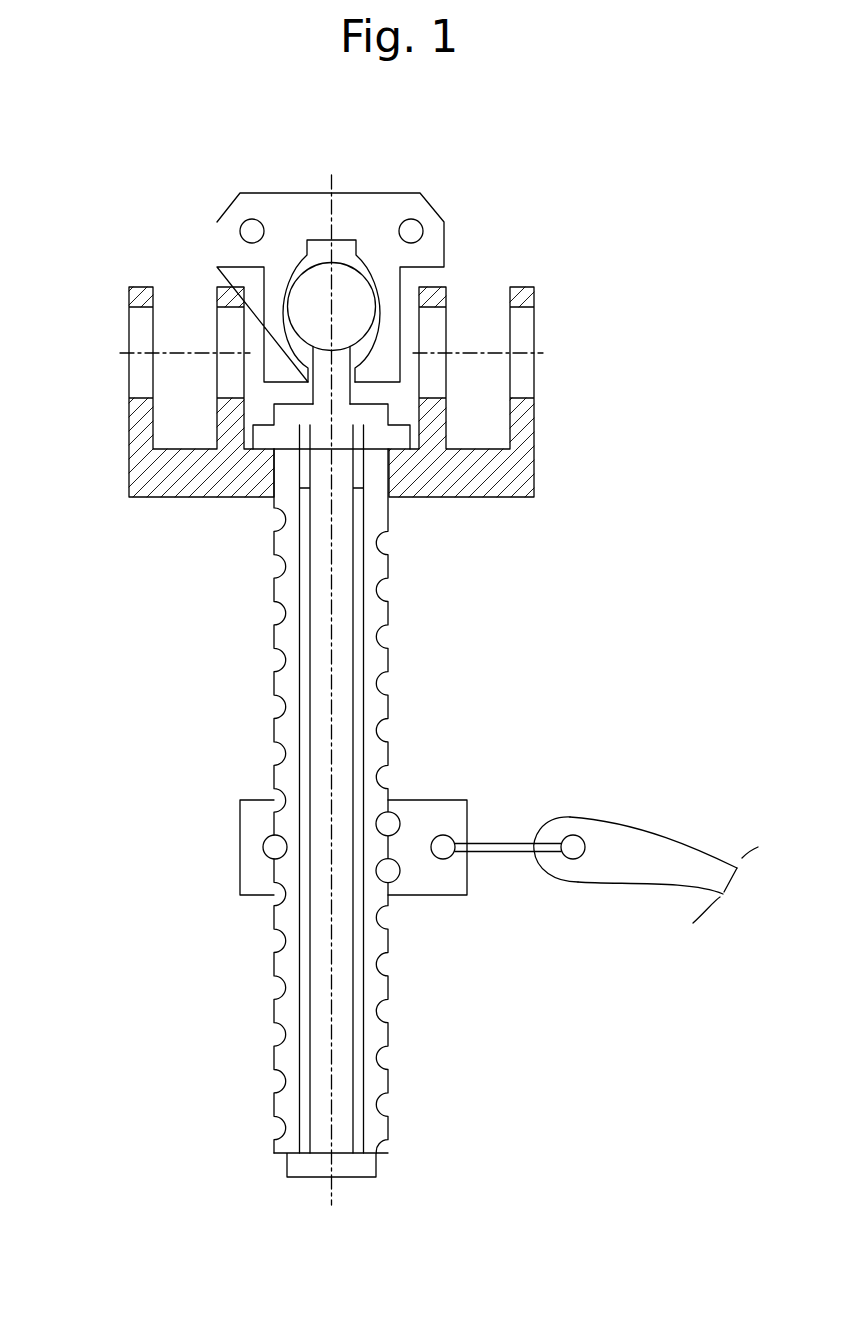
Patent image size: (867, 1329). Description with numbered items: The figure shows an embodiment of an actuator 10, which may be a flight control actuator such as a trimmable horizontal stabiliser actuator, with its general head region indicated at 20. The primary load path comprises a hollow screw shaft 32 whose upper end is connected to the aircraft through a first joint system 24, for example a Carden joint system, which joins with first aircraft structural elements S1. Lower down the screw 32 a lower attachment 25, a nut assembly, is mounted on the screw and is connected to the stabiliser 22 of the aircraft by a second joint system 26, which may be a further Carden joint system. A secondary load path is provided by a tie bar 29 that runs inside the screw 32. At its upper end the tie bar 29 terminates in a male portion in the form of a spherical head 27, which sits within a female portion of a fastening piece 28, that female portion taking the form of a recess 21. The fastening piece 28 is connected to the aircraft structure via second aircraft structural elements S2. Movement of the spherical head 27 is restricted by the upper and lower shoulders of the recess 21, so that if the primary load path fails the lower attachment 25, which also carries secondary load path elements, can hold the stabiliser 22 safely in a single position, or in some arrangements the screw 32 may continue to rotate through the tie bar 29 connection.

The actuator 10 is at (136, 1059).
The clamping head / coupling 20 is at (590, 172).
The recess 21 is at (299, 260).
The stabiliser 22 is at (582, 816).
The first joint system 24 is at (129, 452).
The lower attachment 25 is at (443, 800).
The second joint system 26 is at (512, 843).
The spherical head 27 is at (302, 306).
The fastening piece 28 is at (400, 193).
The tie bar 29 is at (317, 678).
The screw shaft 32 is at (378, 683).
The gap / distance S1 is at (178, 352).
The second aircraft structural elements S2 is at (418, 219).